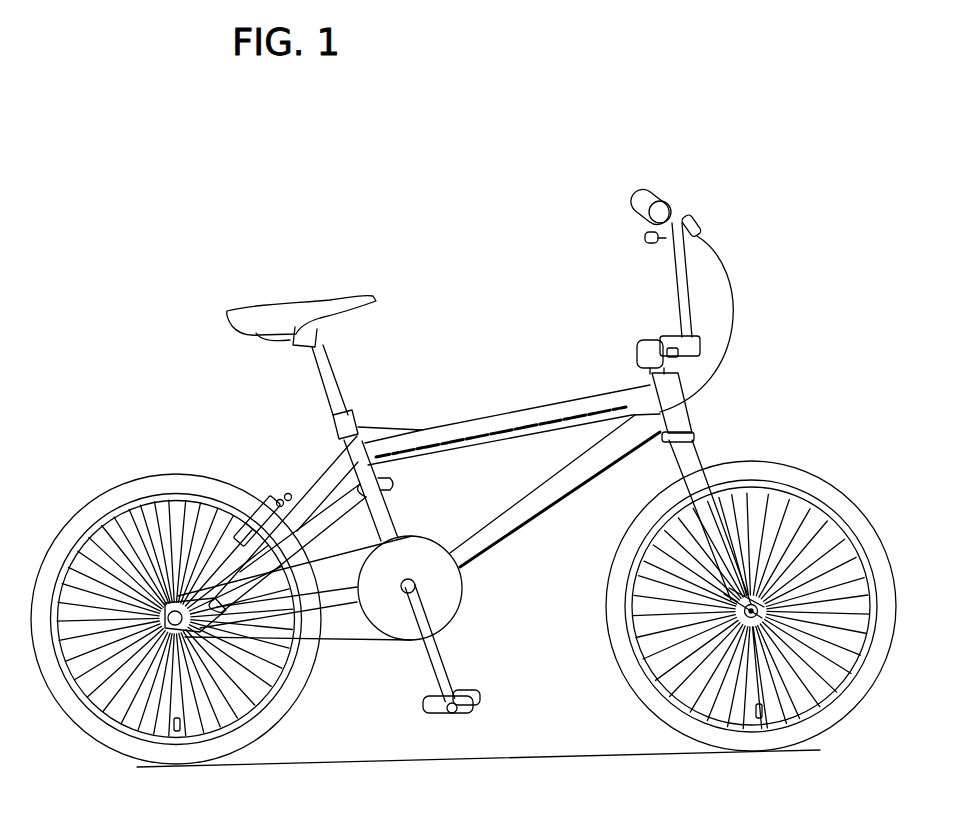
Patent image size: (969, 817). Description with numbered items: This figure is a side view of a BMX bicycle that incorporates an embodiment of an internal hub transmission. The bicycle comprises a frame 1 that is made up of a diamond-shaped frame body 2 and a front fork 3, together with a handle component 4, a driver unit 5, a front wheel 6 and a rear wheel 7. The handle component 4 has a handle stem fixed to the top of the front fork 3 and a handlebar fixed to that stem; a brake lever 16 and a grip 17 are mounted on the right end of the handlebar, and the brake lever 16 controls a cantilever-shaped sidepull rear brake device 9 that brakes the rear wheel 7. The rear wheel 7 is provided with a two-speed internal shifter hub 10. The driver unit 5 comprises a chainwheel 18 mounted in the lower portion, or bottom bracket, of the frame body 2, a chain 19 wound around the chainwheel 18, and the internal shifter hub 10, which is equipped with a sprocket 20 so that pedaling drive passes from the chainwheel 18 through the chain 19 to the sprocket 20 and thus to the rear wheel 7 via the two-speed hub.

The frame 1 is at (428, 463).
The frame body 2 is at (575, 373).
The front fork 3 is at (698, 457).
The handle component 4 is at (696, 295).
The driver unit 5 is at (467, 606).
The front wheel 6 is at (832, 478).
The rear wheel 7 is at (303, 683).
The rear brake device 9 is at (272, 490).
The internal shifter hub 10 is at (137, 688).
The brake lever 16 is at (697, 223).
The grip 17 is at (655, 195).
The chainwheel 18 is at (425, 555).
The chain 19 is at (360, 640).
The sprocket 20 is at (181, 500).